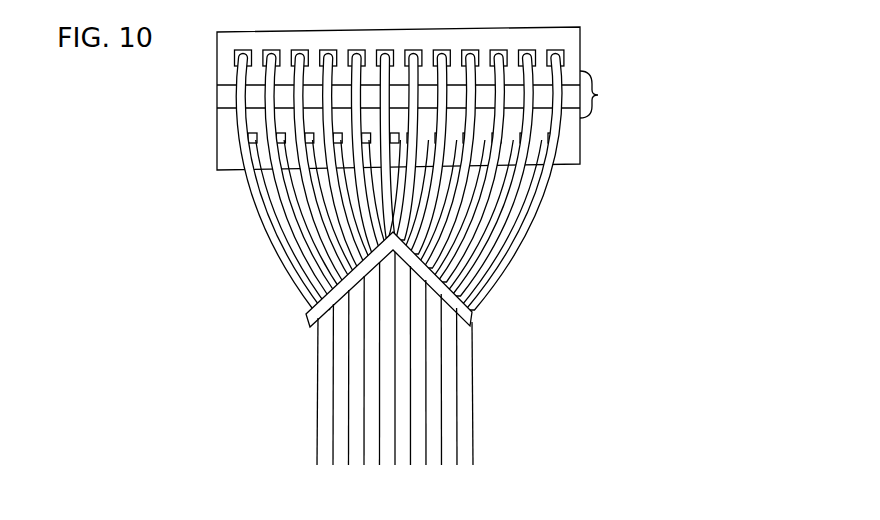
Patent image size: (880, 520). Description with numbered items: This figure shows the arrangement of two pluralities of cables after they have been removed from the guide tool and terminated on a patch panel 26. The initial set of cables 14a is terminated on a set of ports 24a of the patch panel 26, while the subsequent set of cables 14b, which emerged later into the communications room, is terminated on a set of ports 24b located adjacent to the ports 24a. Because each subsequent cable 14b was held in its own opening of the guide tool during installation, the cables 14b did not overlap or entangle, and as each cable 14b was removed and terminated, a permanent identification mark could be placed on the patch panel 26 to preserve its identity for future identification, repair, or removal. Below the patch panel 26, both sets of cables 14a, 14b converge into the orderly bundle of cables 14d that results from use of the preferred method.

The initial set of cables 14a is at (270, 215).
The subsequent set of cables 14b is at (263, 124).
The bundle of cables 14d is at (468, 380).
The ports 24a is at (560, 134).
The ports 24b is at (521, 45).
The patch panel 26 is at (422, 98).